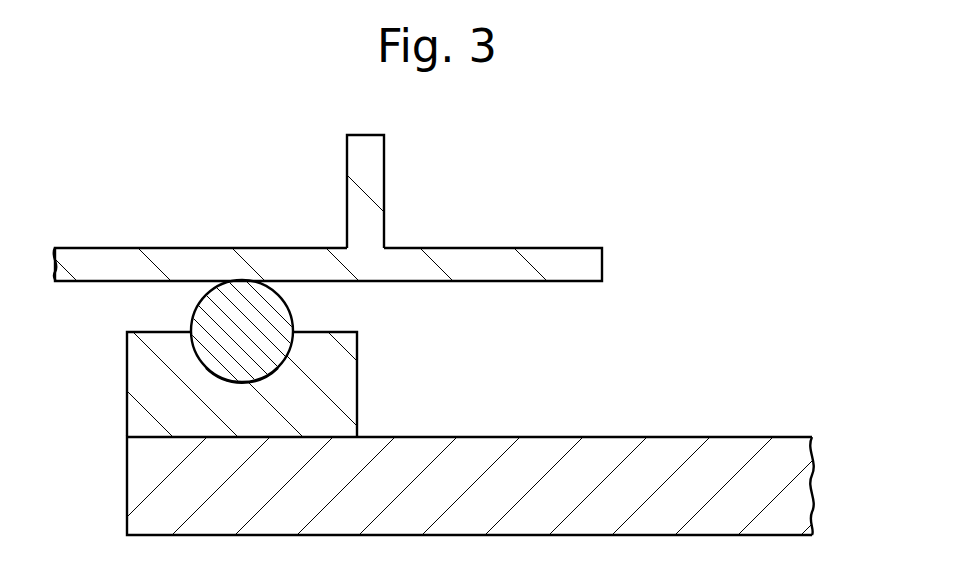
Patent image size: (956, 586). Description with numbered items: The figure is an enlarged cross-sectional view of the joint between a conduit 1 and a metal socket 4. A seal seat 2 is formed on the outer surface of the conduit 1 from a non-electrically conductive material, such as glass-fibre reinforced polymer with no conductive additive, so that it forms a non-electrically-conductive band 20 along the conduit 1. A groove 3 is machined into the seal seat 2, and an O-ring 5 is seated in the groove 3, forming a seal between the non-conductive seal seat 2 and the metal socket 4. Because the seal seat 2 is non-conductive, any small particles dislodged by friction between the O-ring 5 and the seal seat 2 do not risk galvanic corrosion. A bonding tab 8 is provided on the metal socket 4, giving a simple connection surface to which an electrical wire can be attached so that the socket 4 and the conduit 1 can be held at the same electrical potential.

The conduit 1 is at (745, 447).
The seal seat 2 is at (150, 425).
The non-electrically-conductive band 20 is at (152, 375).
The groove 3 is at (250, 383).
The metal socket 4 is at (563, 255).
The O-ring 5 is at (227, 300).
The bonding tab 8 is at (360, 163).